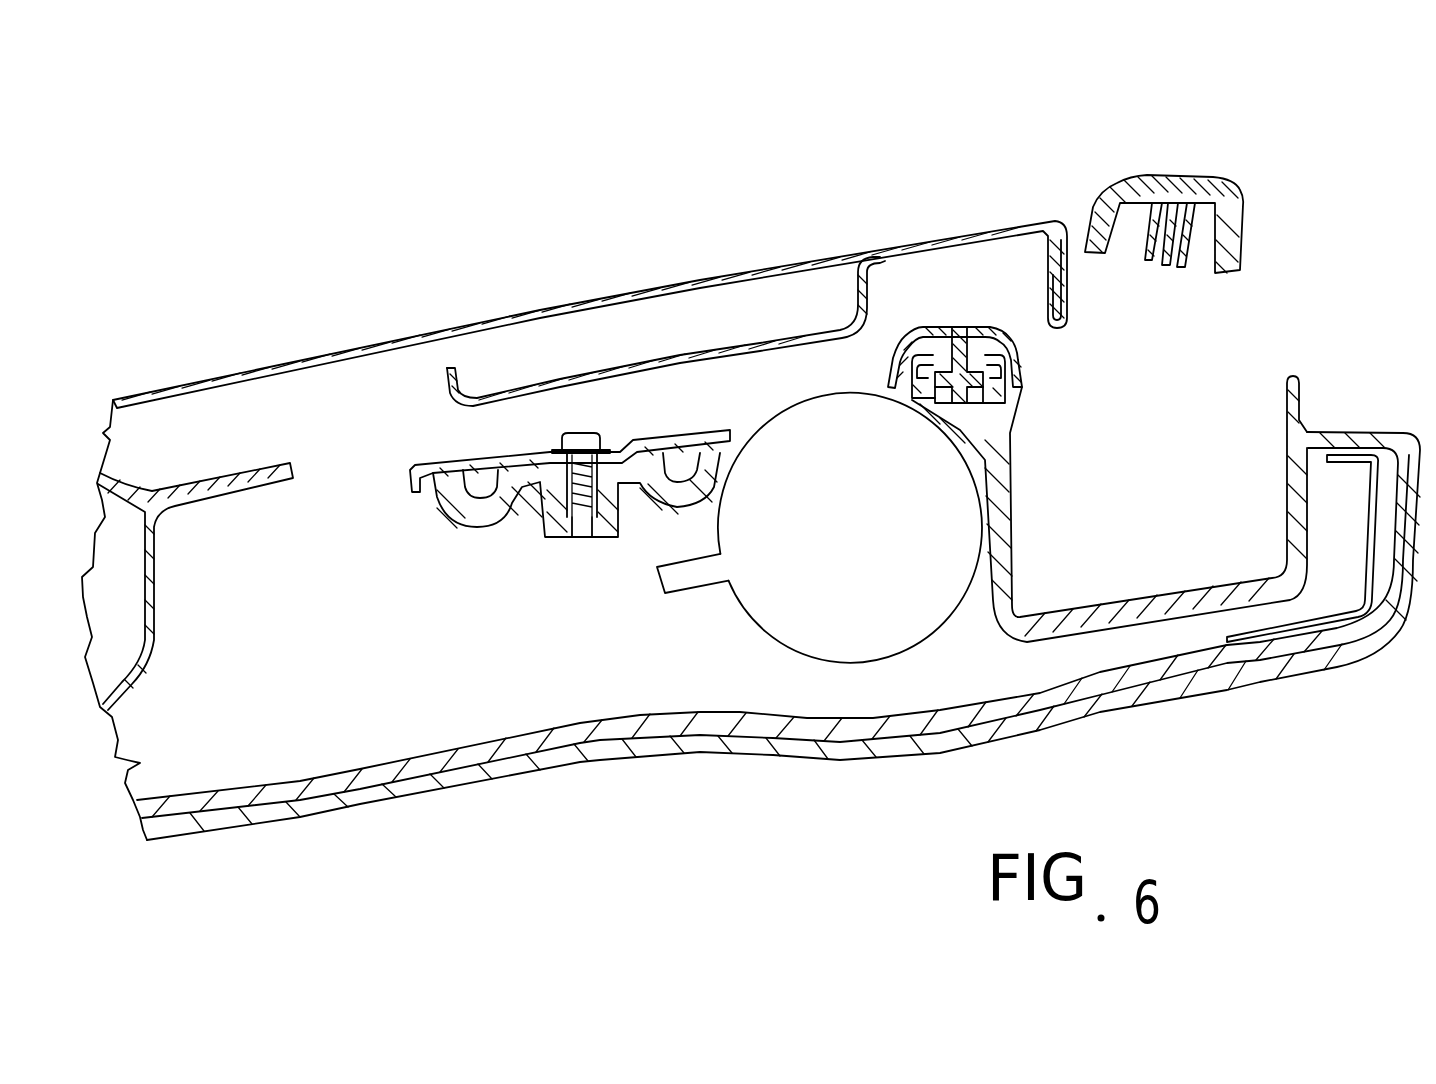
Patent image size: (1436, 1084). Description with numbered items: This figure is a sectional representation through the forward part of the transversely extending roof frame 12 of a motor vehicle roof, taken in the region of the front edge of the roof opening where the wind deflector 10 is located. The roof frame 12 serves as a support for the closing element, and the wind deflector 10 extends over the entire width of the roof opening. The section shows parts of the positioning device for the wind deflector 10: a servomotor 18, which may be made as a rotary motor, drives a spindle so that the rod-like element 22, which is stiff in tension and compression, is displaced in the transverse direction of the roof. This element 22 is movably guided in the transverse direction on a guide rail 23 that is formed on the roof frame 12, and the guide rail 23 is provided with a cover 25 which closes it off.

The wind deflector 10 is at (1197, 190).
The roof frame 12 is at (1167, 620).
The servomotor 18 is at (830, 617).
The element which is stiff in tension-compression 22 is at (963, 358).
The guide rail 23 is at (900, 378).
The cover 25 is at (947, 328).